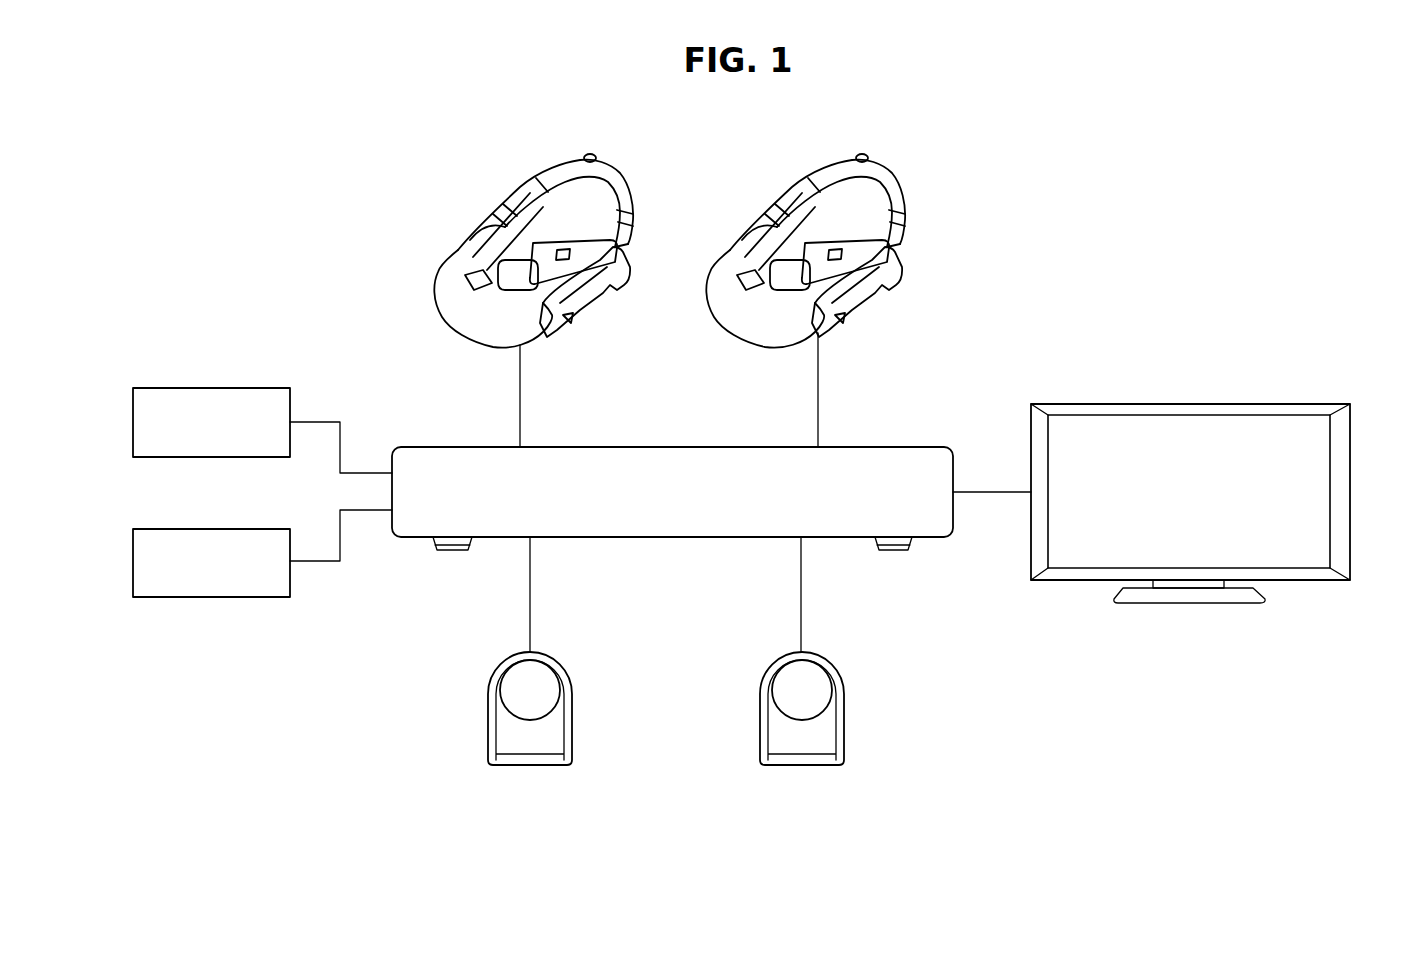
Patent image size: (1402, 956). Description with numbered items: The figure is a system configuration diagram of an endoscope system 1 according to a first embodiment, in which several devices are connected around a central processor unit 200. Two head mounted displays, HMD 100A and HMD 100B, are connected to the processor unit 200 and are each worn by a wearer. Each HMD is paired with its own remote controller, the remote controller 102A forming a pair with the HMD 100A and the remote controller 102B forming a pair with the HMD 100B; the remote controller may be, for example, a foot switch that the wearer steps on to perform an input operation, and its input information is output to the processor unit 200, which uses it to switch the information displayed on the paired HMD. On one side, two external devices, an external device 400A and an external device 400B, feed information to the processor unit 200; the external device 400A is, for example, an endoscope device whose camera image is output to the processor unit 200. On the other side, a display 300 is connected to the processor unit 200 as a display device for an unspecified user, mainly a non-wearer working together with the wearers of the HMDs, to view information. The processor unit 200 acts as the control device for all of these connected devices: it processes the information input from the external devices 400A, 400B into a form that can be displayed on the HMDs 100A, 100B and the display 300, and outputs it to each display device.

The endoscope system 1 is at (1131, 177).
The HMD 100A is at (559, 168).
The HMD 100B is at (829, 168).
The remote controller 102A is at (530, 767).
The remote controller 102B is at (801, 767).
The processor unit 200 is at (672, 446).
The display 300 is at (1240, 402).
The external device 400A is at (238, 387).
The external device 400B is at (238, 598).